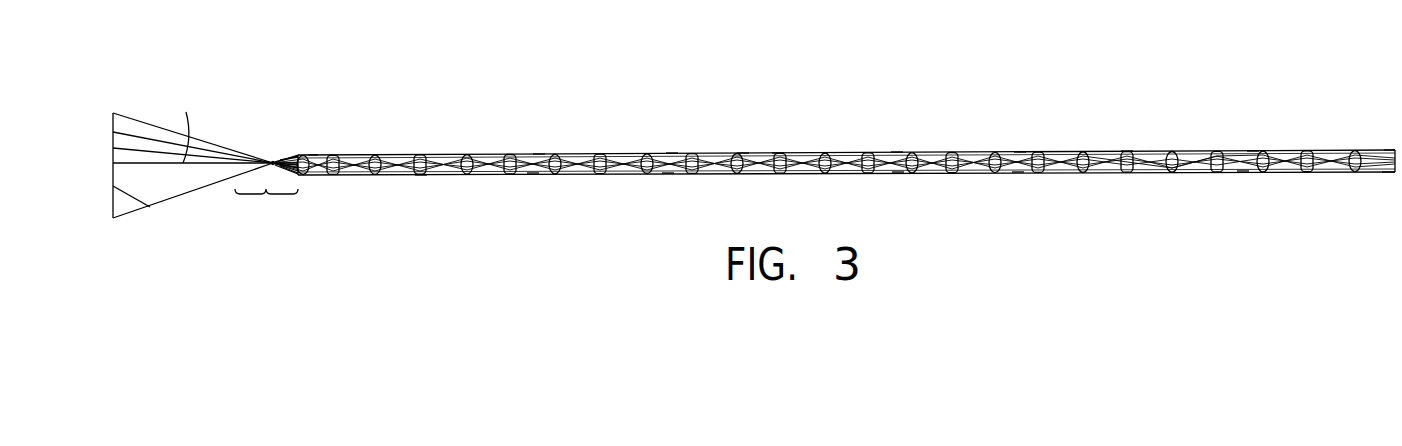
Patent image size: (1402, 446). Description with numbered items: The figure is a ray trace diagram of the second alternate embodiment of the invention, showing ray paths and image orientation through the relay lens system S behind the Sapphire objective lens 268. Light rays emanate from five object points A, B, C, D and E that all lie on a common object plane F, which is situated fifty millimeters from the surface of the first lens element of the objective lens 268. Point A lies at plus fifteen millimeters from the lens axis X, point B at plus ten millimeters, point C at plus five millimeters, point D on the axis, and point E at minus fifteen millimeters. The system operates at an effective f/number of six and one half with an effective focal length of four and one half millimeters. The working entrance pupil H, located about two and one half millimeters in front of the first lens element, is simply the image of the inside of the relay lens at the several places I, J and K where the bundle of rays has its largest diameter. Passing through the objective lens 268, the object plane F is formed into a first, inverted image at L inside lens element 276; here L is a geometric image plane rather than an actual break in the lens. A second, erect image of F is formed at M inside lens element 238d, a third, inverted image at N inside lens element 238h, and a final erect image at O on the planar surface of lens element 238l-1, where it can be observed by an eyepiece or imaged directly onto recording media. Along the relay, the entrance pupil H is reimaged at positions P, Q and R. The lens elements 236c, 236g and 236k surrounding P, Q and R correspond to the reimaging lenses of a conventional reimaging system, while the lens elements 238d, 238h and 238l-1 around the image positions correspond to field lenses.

The object point A is at (197, 133).
The object point B is at (197, 141).
The object point C is at (197, 148).
The object point D is at (197, 161).
The object point E is at (197, 191).
The object plane F is at (115, 186).
The lens axis X is at (178, 131).
The working entrance pupil H is at (273, 152).
The first inverted image L is at (313, 133).
The Sapphire objective lens 268 is at (266, 208).
The lens element 276 is at (320, 155).
The largest ray bundle position I is at (421, 183).
The entrance pupil image position P is at (539, 138).
The lens element 236c is at (533, 175).
The lens element 238d is at (668, 175).
The second erect image M is at (672, 138).
The relay lens system S is at (743, 130).
The largest ray bundle position J is at (778, 138).
The entrance pupil image position Q is at (897, 138).
The lens element 236g is at (898, 173).
The third inverted image N is at (1020, 135).
The lens element 238h is at (1018, 173).
The largest ray bundle position K is at (1127, 143).
The entrance pupil image position R is at (1253, 143).
The lens element 236k is at (1243, 172).
The final erect image O is at (1390, 145).
The lens element 238l-1 is at (1388, 172).